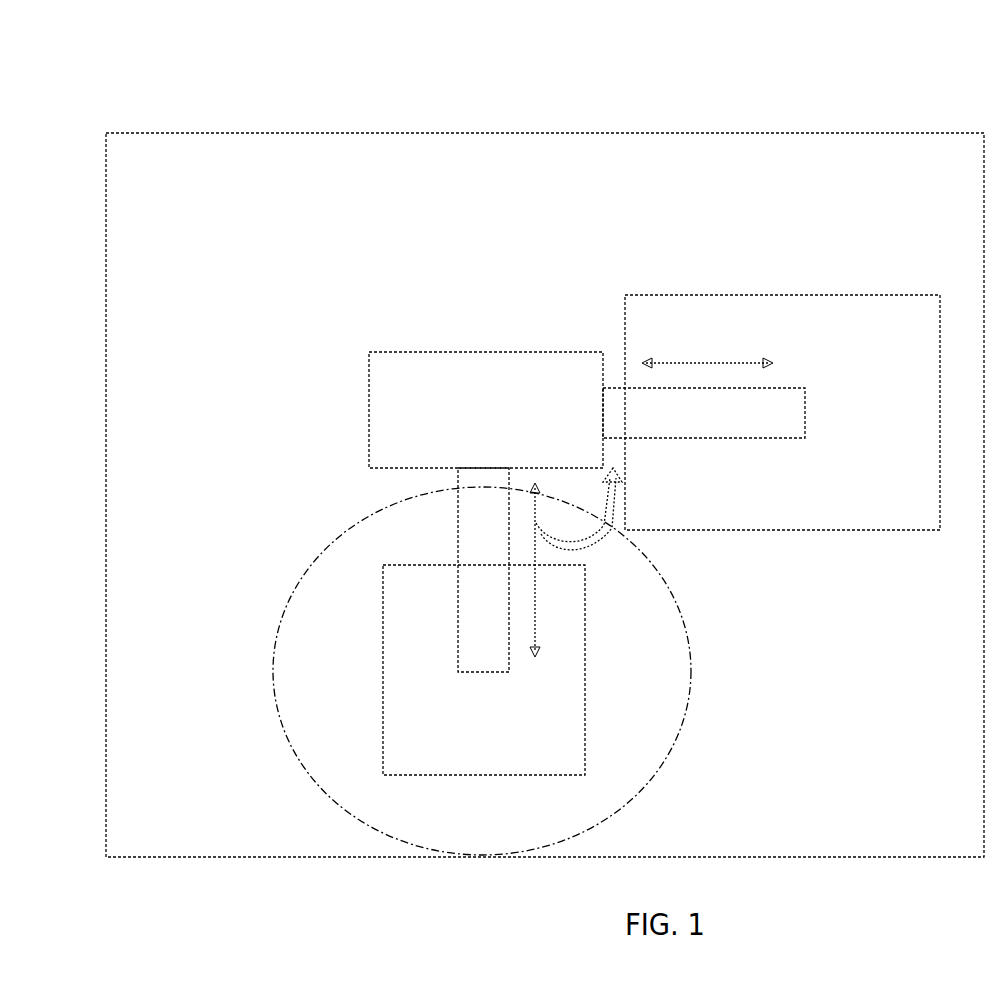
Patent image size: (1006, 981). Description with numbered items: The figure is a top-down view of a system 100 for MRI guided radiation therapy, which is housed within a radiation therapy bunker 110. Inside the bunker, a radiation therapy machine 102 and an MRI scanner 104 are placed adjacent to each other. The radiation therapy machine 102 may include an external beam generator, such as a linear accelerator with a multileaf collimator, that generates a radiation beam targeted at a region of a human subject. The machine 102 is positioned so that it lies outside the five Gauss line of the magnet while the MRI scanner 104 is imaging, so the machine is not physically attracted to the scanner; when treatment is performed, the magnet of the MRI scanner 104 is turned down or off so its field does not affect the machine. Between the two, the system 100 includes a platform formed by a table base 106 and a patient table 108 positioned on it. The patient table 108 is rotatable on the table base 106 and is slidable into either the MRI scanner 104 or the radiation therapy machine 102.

The system 100 is at (504, 122).
The radiation therapy machine 102 is at (761, 388).
The MRI scanner 104 is at (482, 671).
The table base 106 is at (411, 350).
The patient table 108 is at (800, 412).
The radiation therapy bunker 110 is at (545, 477).